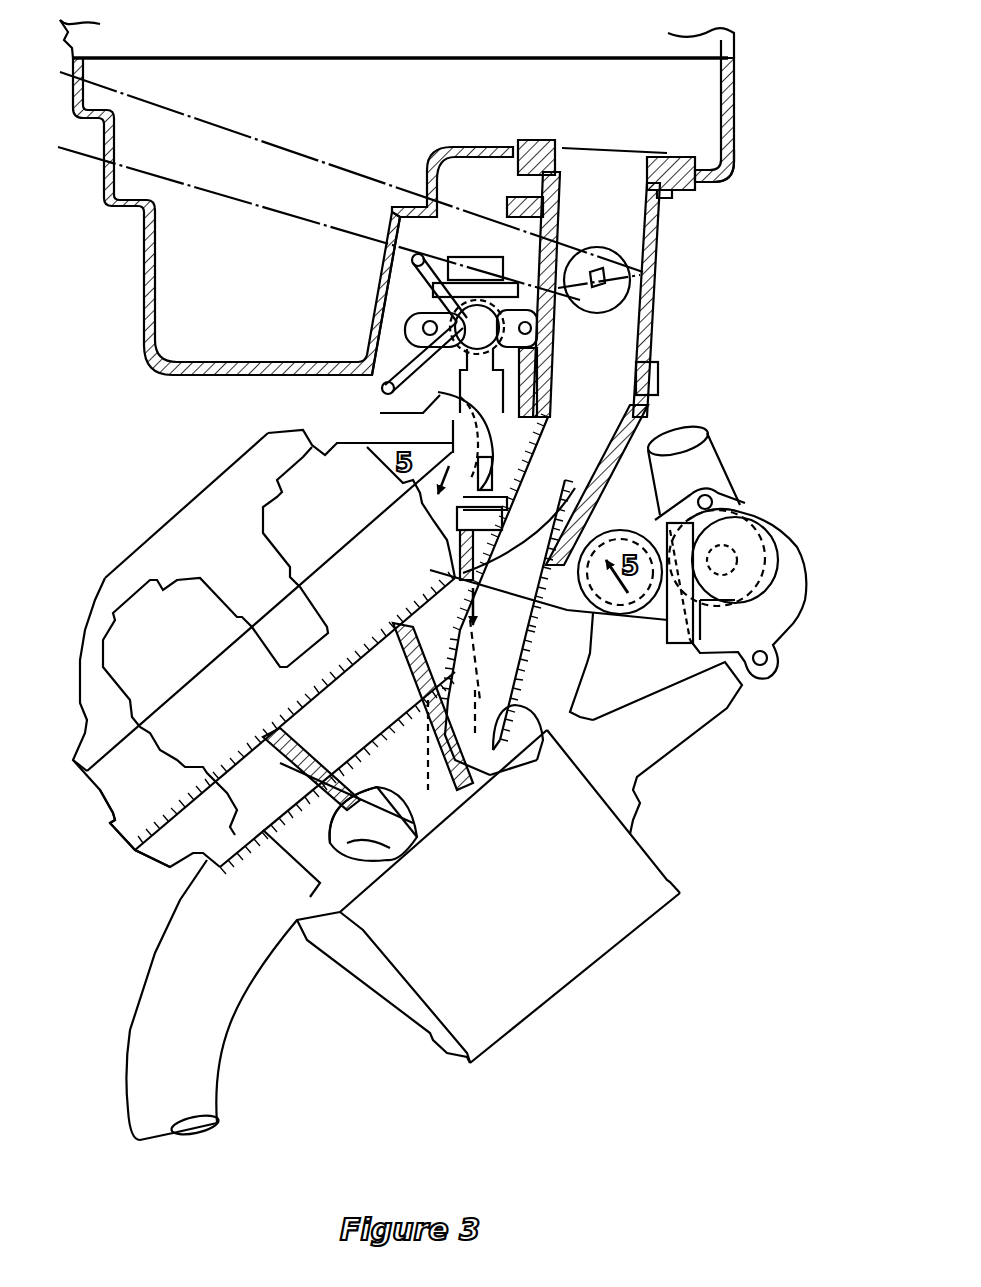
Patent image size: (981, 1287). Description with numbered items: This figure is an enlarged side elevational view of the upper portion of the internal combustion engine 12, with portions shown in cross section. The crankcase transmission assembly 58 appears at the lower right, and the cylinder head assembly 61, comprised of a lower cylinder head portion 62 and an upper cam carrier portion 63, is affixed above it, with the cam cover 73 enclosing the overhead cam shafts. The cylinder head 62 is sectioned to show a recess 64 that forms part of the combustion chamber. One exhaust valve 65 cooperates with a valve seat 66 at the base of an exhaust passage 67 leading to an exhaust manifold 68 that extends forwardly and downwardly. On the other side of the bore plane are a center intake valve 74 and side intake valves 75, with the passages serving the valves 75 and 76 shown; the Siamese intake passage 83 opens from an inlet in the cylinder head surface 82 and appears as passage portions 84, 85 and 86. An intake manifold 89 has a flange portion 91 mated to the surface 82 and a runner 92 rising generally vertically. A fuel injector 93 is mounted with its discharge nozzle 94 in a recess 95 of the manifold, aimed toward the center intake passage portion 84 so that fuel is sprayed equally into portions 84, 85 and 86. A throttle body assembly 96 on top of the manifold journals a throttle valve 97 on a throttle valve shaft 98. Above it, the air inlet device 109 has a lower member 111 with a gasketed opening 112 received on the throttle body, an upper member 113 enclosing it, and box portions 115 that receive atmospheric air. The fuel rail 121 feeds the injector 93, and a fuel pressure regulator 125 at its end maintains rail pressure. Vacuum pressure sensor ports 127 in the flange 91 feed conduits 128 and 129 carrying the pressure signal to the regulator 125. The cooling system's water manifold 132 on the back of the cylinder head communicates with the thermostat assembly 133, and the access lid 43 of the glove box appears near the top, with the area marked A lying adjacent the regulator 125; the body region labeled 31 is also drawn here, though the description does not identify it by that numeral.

The internal combustion engine 12 is at (360, 1022).
The carburetor body 31 is at (563, 603).
The access lid 43 is at (707, 430).
The crankcase transmission assembly 58 is at (600, 947).
The cylinder head assembly 61 is at (53, 870).
The lower cylinder head portion 62 is at (143, 870).
The upper cam carrier portion 63 is at (113, 827).
The recess 64 is at (450, 827).
The exhaust valve 65 is at (427, 837).
The valve seat 66 is at (397, 857).
The exhaust passage 67 is at (377, 867).
The exhaust manifold 68 is at (243, 990).
The cam cover 73 is at (82, 712).
The center intake valve 74 is at (492, 780).
The side intake valve 75 is at (457, 823).
The intake valve 76 is at (500, 793).
The cylinder head surface 82 is at (513, 477).
The intake passage 83 is at (560, 597).
The center intake passage portion 84 is at (543, 737).
The intake passage portion 85 is at (400, 705).
The intake passage portion 86 is at (340, 794).
The intake manifold 89 is at (620, 497).
The flange portion 91 is at (452, 563).
The runner 92 is at (660, 392).
The fuel injector 93 is at (400, 425).
The discharge nozzle 94 is at (457, 510).
The recess 95 is at (455, 568).
The throttle body assembly 96 is at (668, 297).
The throttle valve 97 is at (660, 260).
The throttle valve shaft 98 is at (610, 268).
The air inlet device 109 is at (775, 126).
The lower member 111 is at (738, 146).
The gasketed opening 112 is at (700, 187).
The upper member 113 is at (738, 36).
The box portion 115 is at (133, 290).
The fuel rail 121 is at (553, 342).
The fuel pressure regulator 125 is at (477, 257).
The vacuum pressure sensor port 127 is at (503, 462).
The conduit 128 is at (437, 422).
The conduit 129 is at (370, 250).
The water manifold 132 is at (655, 635).
The thermostat assembly 133 is at (777, 513).
The wall section A is at (370, 297).